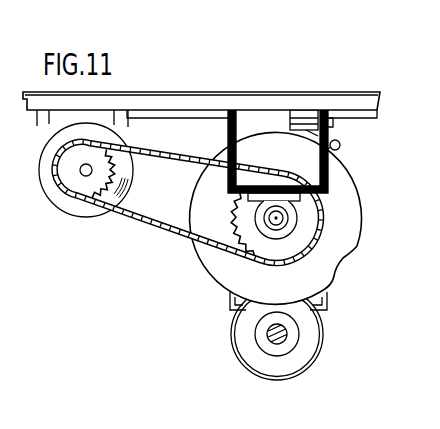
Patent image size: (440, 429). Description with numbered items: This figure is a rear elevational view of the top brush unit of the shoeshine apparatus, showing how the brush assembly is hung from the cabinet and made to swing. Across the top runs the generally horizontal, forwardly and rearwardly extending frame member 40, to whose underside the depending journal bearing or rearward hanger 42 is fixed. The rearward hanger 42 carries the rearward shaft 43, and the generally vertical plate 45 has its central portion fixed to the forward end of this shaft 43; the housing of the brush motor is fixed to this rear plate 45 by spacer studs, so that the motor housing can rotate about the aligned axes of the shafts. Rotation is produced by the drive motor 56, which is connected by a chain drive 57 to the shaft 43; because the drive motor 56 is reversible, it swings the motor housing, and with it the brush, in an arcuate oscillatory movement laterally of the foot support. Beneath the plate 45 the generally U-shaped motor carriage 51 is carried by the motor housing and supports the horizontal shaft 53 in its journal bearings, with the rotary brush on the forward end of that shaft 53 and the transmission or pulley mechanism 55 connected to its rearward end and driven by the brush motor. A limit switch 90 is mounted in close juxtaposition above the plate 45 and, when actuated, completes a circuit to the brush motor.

The frame member 40 is at (380, 99).
The rearward hanger 42 is at (323, 170).
The rearward shaft 43 is at (287, 218).
The vertical plate 45 is at (345, 183).
The motor carriage 51 is at (327, 300).
The shaft 53 is at (267, 335).
The transmission or pulley mechanism 55 is at (303, 345).
The drive motor 56 is at (76, 212).
The chain drive 57 is at (160, 228).
The limit switch 90 is at (290, 124).